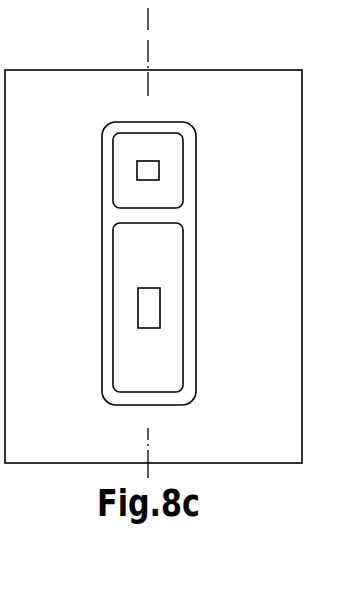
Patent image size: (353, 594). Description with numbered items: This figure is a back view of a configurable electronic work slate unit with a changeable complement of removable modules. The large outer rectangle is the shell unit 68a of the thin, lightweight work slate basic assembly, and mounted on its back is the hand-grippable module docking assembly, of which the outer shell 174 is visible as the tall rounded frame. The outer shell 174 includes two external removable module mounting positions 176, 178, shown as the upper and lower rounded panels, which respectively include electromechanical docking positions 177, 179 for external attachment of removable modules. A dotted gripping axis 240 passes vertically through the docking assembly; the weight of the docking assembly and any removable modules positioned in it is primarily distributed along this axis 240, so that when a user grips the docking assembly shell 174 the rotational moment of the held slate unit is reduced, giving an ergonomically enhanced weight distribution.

The shell unit 68a is at (55, 70).
The gripping axis 240 is at (148, 20).
The outer shell 174 is at (168, 122).
The external removable module mounting position 176 is at (183, 190).
The electromechanical docking position 177 is at (137, 171).
The external removable module mounting position 178 is at (184, 233).
The electromechanical docking position 179 is at (138, 305).